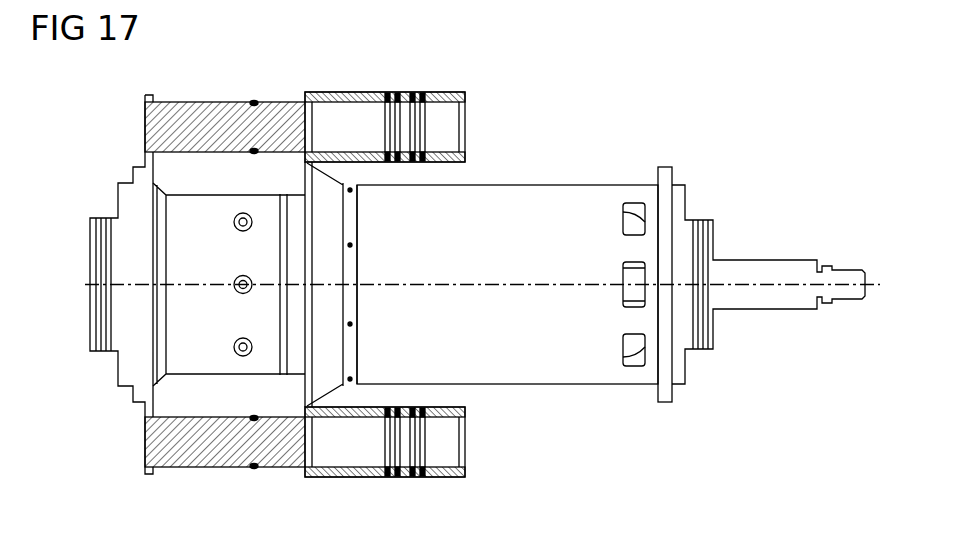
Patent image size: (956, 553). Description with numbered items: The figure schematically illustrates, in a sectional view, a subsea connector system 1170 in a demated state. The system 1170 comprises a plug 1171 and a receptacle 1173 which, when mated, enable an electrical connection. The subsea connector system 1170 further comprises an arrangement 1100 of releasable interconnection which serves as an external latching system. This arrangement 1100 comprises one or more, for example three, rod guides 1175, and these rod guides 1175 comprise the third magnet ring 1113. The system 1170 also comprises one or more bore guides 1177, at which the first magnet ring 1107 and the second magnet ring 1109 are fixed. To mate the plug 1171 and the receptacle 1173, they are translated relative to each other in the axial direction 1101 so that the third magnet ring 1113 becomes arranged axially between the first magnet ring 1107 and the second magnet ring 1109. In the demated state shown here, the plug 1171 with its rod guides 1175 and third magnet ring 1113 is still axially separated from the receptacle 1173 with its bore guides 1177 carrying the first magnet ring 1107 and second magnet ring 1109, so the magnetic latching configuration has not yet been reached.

The arrangement of releasable interconnection 1100 is at (560, 150).
The axial direction 1101 is at (478, 282).
The first magnet ring 1107 is at (390, 93).
The second magnet ring 1109 is at (415, 93).
The third magnet ring 1113 is at (254, 102).
The subsea connector system 1170 is at (121, 141).
The plug 1171 is at (185, 350).
The receptacle 1173 is at (587, 358).
The rod guides 1175 is at (195, 113).
The bore guides 1177 is at (466, 96).